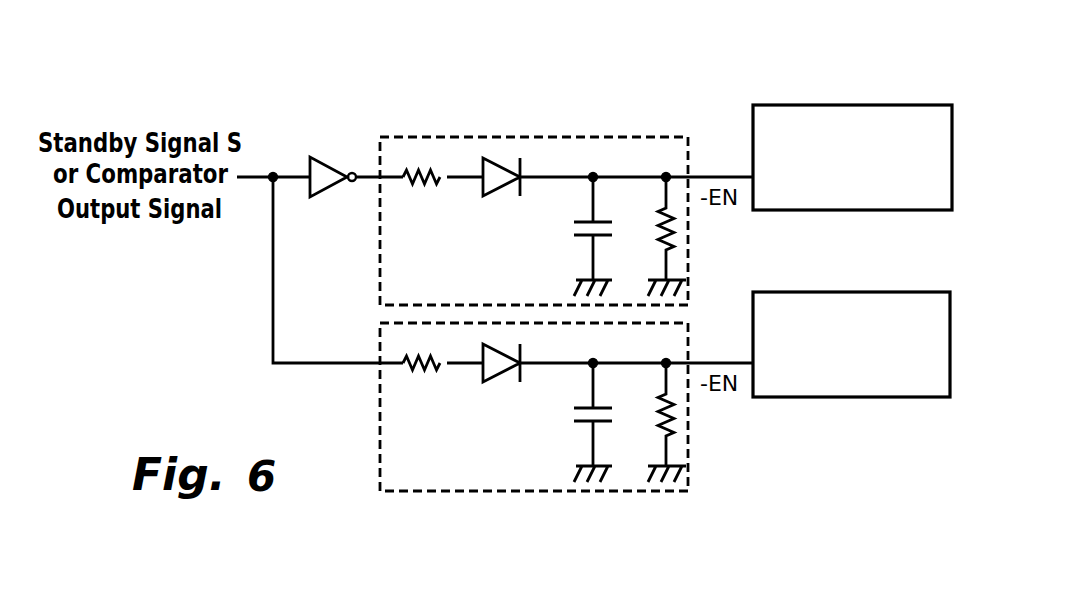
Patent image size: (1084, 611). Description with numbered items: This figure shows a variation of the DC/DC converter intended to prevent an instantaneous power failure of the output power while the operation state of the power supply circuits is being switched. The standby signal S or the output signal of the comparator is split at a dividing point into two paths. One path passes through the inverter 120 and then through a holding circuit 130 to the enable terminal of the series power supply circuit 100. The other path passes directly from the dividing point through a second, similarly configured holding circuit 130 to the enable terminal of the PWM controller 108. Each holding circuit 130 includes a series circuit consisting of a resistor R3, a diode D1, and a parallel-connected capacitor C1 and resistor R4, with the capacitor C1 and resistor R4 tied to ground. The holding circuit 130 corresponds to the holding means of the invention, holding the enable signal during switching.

The series power supply circuit 100 is at (904, 105).
The PWM controller 108 is at (904, 292).
The inverter 120 is at (330, 192).
The holding circuit 130 is at (628, 137).
The resistor R3 is at (431, 187).
The diode D1 is at (511, 188).
The capacitor C1 is at (583, 245).
The resistor R4 is at (677, 236).